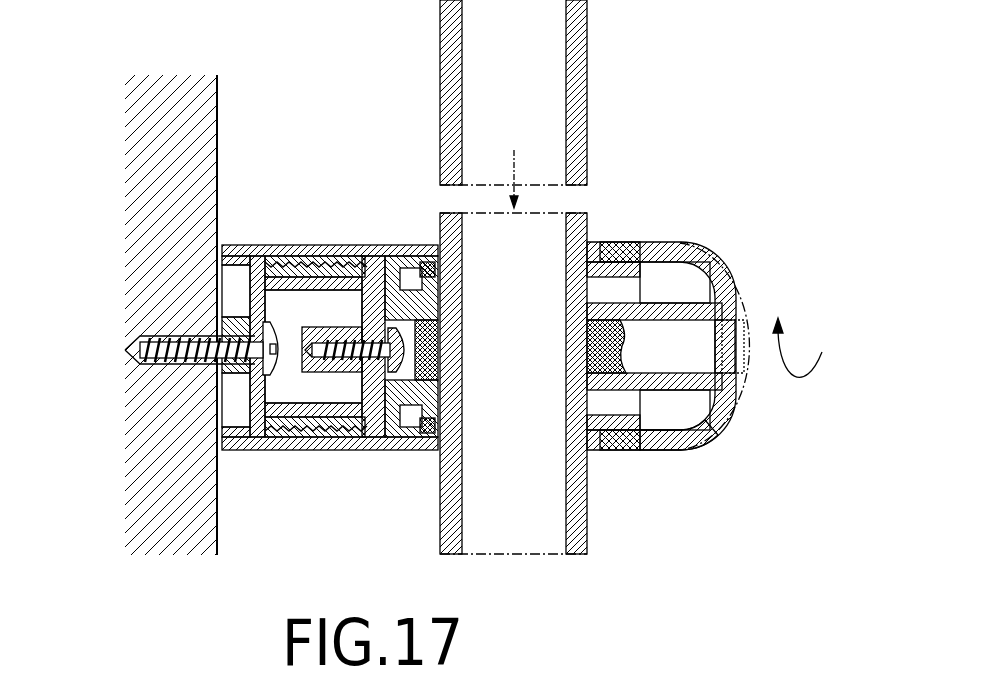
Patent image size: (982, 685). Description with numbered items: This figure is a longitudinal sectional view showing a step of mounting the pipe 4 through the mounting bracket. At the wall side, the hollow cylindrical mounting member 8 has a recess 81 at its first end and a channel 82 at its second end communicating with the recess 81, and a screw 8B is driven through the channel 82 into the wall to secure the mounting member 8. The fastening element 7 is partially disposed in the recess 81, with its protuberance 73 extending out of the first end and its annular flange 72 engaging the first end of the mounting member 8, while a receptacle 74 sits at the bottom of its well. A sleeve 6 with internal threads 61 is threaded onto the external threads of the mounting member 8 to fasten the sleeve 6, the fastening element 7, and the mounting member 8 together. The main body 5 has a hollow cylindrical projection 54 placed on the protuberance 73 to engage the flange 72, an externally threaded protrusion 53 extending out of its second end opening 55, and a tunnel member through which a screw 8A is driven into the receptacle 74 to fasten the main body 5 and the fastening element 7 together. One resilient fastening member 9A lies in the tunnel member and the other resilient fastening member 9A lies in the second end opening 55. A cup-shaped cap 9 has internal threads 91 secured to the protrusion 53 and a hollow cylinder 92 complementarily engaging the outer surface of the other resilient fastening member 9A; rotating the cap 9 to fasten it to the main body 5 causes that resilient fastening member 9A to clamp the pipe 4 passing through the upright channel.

The pipe 4 is at (612, 58).
The main body 5 is at (430, 245).
The sleeve 6 is at (312, 245).
The fastening element 7 is at (272, 245).
The mounting member 8 is at (240, 245).
The screw 8A is at (340, 450).
The screw 8B is at (162, 335).
The cup-shaped cap 9 is at (730, 277).
The resilient fastening member 9A is at (452, 350).
The externally threaded protrusion 53 is at (620, 452).
The hollow cylindrical projection 54 is at (395, 245).
The second end opening 55 is at (662, 452).
The internal threads 61 is at (344, 245).
The annular flange 72 is at (390, 450).
The protuberance 73 is at (410, 450).
The receptacle 74 is at (310, 352).
The recess 81 is at (295, 450).
The channel 82 is at (225, 362).
The internal threads 91 is at (655, 242).
The hollow cylinder 92 is at (705, 455).